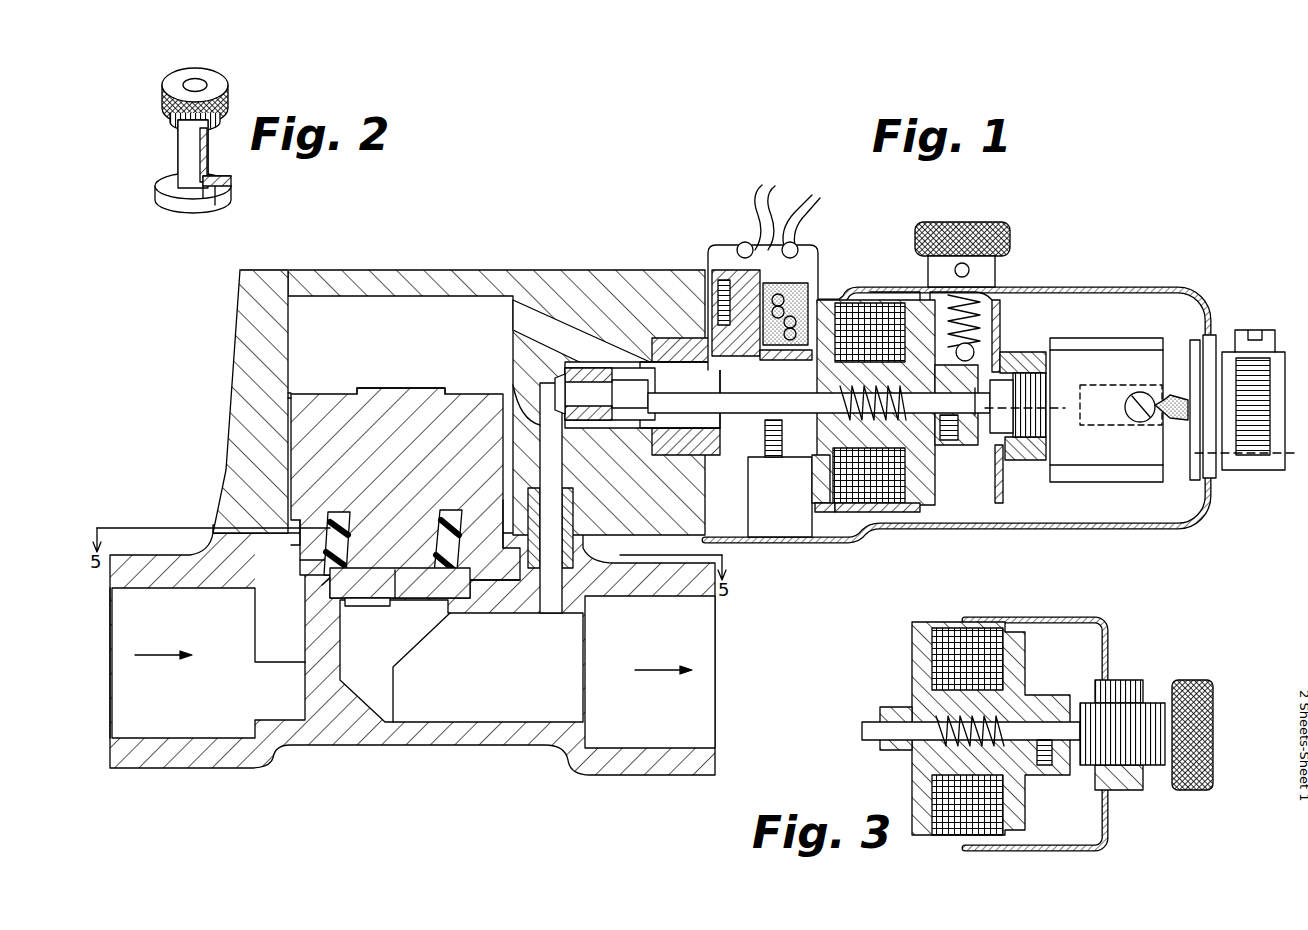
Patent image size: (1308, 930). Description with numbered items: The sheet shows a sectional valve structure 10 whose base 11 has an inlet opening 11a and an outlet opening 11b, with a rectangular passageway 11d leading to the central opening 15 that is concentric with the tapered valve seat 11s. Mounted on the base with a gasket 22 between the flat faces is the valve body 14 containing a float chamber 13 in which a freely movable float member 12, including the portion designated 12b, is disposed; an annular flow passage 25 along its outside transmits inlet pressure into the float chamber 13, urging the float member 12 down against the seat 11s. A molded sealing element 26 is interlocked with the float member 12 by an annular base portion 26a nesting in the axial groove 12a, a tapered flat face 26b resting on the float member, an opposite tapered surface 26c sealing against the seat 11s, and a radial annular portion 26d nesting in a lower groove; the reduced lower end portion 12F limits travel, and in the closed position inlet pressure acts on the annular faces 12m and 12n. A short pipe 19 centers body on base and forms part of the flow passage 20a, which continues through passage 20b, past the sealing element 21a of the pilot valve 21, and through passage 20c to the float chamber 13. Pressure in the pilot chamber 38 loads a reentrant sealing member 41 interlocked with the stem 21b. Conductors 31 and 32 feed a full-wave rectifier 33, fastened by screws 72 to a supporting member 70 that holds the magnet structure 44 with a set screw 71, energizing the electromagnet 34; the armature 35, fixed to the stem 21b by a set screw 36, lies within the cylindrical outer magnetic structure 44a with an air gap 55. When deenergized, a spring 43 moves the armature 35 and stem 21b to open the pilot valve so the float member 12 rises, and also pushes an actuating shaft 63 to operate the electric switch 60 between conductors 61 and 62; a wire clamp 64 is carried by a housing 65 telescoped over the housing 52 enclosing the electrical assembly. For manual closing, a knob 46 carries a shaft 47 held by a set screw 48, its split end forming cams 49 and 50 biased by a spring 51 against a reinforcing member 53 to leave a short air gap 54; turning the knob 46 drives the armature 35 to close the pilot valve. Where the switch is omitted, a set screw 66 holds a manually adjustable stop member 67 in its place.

In FIG. 1, the valve structure 10 is at (180, 350).
In FIG. 1, the base 11 is at (338, 748).
In FIG. 1, the inlet opening 11a is at (112, 710).
In FIG. 1, the outlet opening 11b is at (715, 720).
In FIG. 1, the passageway 11d is at (255, 640).
In FIG. 1, the tapered valve seat 11s is at (352, 606).
In FIG. 1, the float member 12 is at (335, 395).
In FIG. 1, the annular groove 12a is at (460, 492).
In FIG. 1, the core shoulder 12b is at (392, 388).
In FIG. 1, the lower end portion 12F is at (490, 580).
In FIG. 1, the annular face 12m is at (302, 528).
In FIG. 1, the annular face 12n is at (325, 565).
In FIG. 1, the float chamber 13 is at (447, 297).
In FIG. 1, the valve body 14 is at (258, 272).
In FIG. 1, the opening 15 is at (402, 647).
In FIG. 1, the short length of pipe 19 is at (535, 568).
In FIG. 1, the flow passage 20a is at (551, 613).
In FIG. 1, the flow passage 20b is at (513, 395).
In FIG. 1, the passage 20c is at (525, 310).
In FIG. 1, the pilot valve 21 is at (652, 348).
In FIG. 1, the sealing element 21a is at (555, 390).
In FIG. 1, the stem 21b is at (810, 413).
In FIG. 3, the stem 21b is at (870, 722).
In FIG. 1, the gasket 22 is at (212, 527).
In FIG. 1, the annular flow passage 25 is at (293, 393).
In FIG. 1, the sealing element 26 is at (445, 598).
In FIG. 1, the annular base portion 26a is at (350, 514).
In FIG. 1, the tapered flat face 26b is at (355, 568).
In FIG. 1, the tapered sealing surface 26c is at (325, 585).
In FIG. 1, the radially extending annular portion 26d is at (395, 570).
In FIG. 1, the conductor 31 is at (760, 184).
In FIG. 1, the conductor 32 is at (816, 196).
In FIG. 1, the full-wave rectifier 33 is at (818, 268).
In FIG. 1, the electromagnet 34 is at (880, 303).
In FIG. 3, the electromagnet 34 is at (940, 628).
In FIG. 1, the armature 35 is at (945, 478).
In FIG. 3, the armature 35 is at (1025, 800).
In FIG. 1, the set screw 36 is at (950, 440).
In FIG. 3, the set screw 36 is at (1044, 765).
In FIG. 1, the pilot chamber 38 is at (622, 368).
In FIG. 1, the sealing member 41 is at (676, 338).
In FIG. 1, the spring 43 is at (880, 386).
In FIG. 3, the spring 43 is at (945, 716).
In FIG. 1, the magnet structure 44 is at (812, 500).
In FIG. 1, the cylindrical outer magnetic structure 44a is at (830, 512).
In FIG. 2, the actuating knob 46 is at (228, 82).
In FIG. 1, the actuating knob 46 is at (1010, 232).
In FIG. 2, the shaft 47 is at (207, 152).
In FIG. 2, the set screw 48 is at (176, 128).
In FIG. 2, the cam 49 is at (195, 207).
In FIG. 1, the cam 49 is at (1003, 346).
In FIG. 2, the cam 50 is at (226, 192).
In FIG. 1, the spring 51 is at (985, 300).
In FIG. 1, the housing 52 is at (1000, 320).
In FIG. 3, the housing 52 is at (1062, 620).
In FIG. 1, the reinforcing member 53 is at (1003, 475).
In FIG. 1, the air gap 54 is at (942, 380).
In FIG. 1, the air gap 55 is at (920, 507).
In FIG. 1, the electric switch 60 is at (1100, 482).
In FIG. 1, the conductor 61 is at (1180, 395).
In FIG. 1, the conductor 62 is at (1150, 420).
In FIG. 1, the actuating shaft 63 is at (977, 440).
In FIG. 1, the wire clamp 64 is at (1250, 470).
In FIG. 1, the housing 65 is at (1105, 290).
In FIG. 1, the set screw 66 is at (1040, 340).
In FIG. 3, the set screw 66 is at (1120, 680).
In FIG. 3, the manually-adjustable stop member 67 is at (1150, 765).
In FIG. 1, the supporting member 70 is at (740, 497).
In FIG. 1, the set screw 71 is at (772, 457).
In FIG. 1, the fastening screws 72 is at (725, 280).